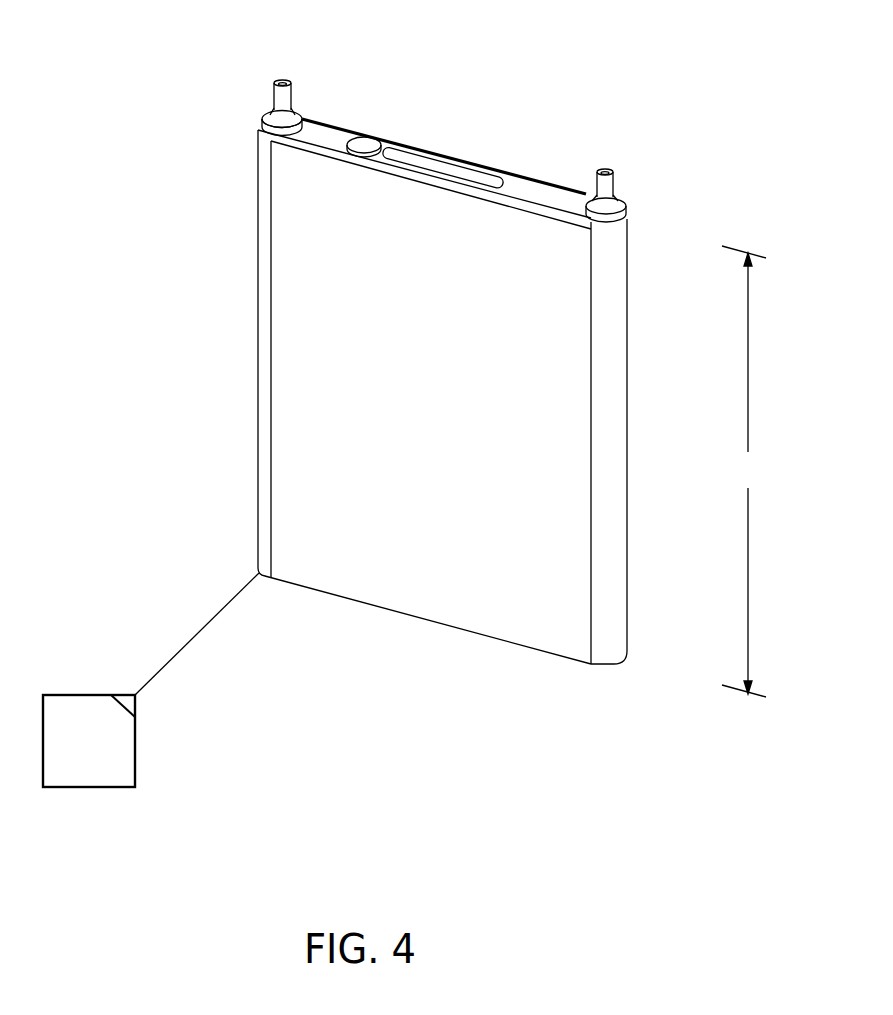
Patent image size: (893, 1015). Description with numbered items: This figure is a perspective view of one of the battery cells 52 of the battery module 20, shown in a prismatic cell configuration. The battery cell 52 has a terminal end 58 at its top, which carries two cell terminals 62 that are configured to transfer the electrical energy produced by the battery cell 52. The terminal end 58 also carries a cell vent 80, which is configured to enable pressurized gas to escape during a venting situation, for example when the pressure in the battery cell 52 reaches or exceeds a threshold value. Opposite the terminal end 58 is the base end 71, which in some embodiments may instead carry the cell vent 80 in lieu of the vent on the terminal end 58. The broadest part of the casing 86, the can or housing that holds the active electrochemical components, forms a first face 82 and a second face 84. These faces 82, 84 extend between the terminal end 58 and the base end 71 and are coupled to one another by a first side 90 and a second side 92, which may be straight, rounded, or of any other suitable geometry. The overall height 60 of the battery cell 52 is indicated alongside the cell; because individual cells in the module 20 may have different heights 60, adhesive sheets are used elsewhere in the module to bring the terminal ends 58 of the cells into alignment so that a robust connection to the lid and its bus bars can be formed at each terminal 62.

The battery module 20 is at (87, 787).
The battery cell 52 is at (612, 56).
The terminal end 58 is at (506, 141).
The height 60 is at (744, 471).
The terminal 62 is at (281, 93).
The base end 71 is at (438, 659).
The cell vent 80 is at (398, 156).
The first face 82 is at (543, 570).
The second face 84 is at (628, 535).
The casing 86 is at (315, 300).
The first side 90 is at (607, 498).
The second side 92 is at (258, 412).